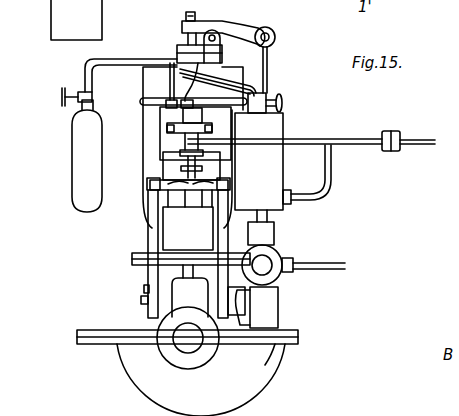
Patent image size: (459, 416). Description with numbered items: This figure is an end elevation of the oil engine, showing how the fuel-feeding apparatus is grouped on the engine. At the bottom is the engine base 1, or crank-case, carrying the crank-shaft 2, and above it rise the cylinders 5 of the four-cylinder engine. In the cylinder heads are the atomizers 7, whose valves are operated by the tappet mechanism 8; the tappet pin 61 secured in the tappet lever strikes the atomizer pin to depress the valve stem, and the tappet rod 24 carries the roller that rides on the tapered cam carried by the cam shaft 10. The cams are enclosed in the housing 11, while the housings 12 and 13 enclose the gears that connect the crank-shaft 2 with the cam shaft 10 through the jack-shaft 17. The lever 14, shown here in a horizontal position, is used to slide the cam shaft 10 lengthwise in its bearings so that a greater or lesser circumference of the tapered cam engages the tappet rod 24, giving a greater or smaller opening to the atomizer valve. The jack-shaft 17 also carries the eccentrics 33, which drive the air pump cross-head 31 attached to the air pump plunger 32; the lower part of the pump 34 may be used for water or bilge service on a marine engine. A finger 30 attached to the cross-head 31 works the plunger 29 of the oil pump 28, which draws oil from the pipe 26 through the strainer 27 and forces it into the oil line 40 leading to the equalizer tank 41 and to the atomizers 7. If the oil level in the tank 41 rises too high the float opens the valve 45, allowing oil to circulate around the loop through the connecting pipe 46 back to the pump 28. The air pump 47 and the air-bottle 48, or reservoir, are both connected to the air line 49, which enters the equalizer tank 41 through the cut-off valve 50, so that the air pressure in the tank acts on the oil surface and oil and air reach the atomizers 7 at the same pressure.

The engine base 1 is at (113, 367).
The crank-shaft 2 is at (188, 338).
The cylinders 5 is at (150, 88).
The atomizer 7 is at (180, 44).
The tappet mechanism 8 is at (249, 11).
The cam shaft 10 is at (264, 263).
The housing 11 is at (263, 250).
The housing 12 is at (168, 330).
The housing 13 is at (268, 302).
The lever 14 is at (340, 264).
The jack-shaft 17 is at (141, 299).
The tappet rod 24 is at (268, 65).
The pipe 26 is at (434, 127).
The strainer 27 is at (405, 120).
The oil pump 28 is at (163, 117).
The plunger 29 is at (187, 153).
The finger 30 is at (190, 178).
The air pump cross-head 31 is at (147, 182).
The air pump plunger 32 is at (210, 167).
The eccentrics 33 is at (155, 292).
The lower part of the pump 34 is at (178, 225).
The oil line 40 is at (217, 61).
The equalizer tank 41 is at (270, 127).
The valve 45 is at (302, 175).
The connecting pipe 46 is at (331, 172).
The air pump 47 is at (163, 122).
The air-bottle 48 is at (80, 152).
The air line 49 is at (173, 70).
The cut-off valve 50 is at (253, 100).
The tappet pin 61 is at (186, 16).